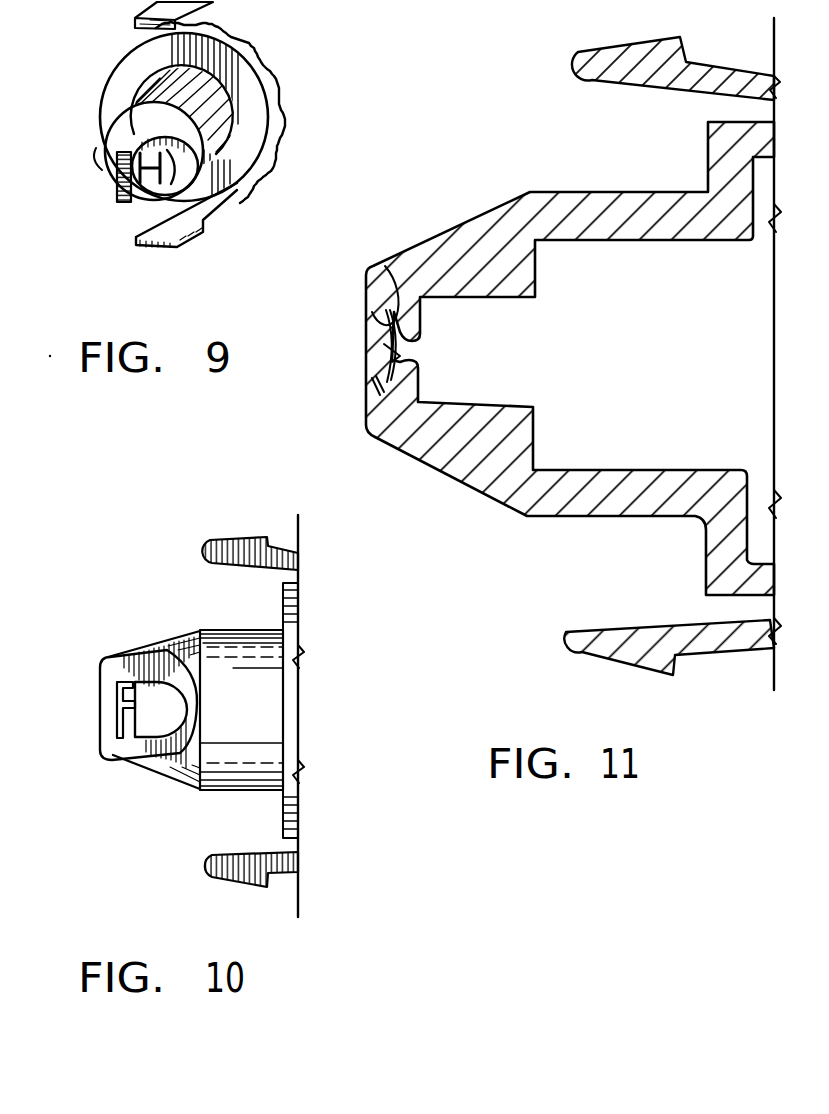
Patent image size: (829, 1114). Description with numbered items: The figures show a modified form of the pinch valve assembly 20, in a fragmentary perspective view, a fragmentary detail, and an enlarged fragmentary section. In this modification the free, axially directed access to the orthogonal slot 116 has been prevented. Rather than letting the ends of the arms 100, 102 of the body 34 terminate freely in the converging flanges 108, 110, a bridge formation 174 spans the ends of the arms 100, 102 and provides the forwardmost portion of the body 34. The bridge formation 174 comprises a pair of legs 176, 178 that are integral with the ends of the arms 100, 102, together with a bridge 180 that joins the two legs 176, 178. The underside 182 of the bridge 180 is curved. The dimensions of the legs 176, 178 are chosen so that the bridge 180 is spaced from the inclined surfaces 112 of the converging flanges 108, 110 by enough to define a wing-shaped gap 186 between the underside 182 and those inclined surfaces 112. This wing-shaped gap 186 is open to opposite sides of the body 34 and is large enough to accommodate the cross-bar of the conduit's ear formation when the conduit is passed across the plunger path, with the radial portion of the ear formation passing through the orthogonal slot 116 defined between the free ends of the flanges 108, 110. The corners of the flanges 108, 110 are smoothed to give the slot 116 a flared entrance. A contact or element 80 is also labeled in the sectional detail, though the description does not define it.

In FIG. 9, the pinch valve assembly 20 is at (275, 53).
In FIG. 9, the body 34 is at (136, 77).
In FIG. 10, the body 34 is at (238, 620).
In FIG. 11, the body 34 is at (515, 184).
In FIG. 9, the arm 100 is at (135, 131).
In FIG. 11, the arm 100 is at (456, 228).
In FIG. 9, the arm 102 is at (167, 198).
In FIG. 11, the arm 102 is at (478, 457).
In FIG. 9, the bridge formation 174 is at (117, 180).
In FIG. 11, the bridge formation 174 is at (350, 388).
In FIG. 9, the orthogonal slot 116 is at (125, 200).
In FIG. 11, the orthogonal slot 116 is at (406, 352).
In FIG. 10, the flange 108 is at (120, 692).
In FIG. 11, the flange 108 is at (409, 312).
In FIG. 10, the flange 110 is at (155, 735).
In FIG. 11, the flange 110 is at (409, 363).
In FIG. 11, the underside of the bridge 182 is at (385, 266).
In FIG. 11, the inclined surface 112 is at (388, 331).
In FIG. 11, the wing-shaped gap 186 is at (381, 360).
In FIG. 11, the contact 80 is at (367, 408).
In FIG. 10, the leg 176 is at (118, 672).
In FIG. 10, the leg 178 is at (113, 747).
In FIG. 10, the bridge 180 is at (112, 707).